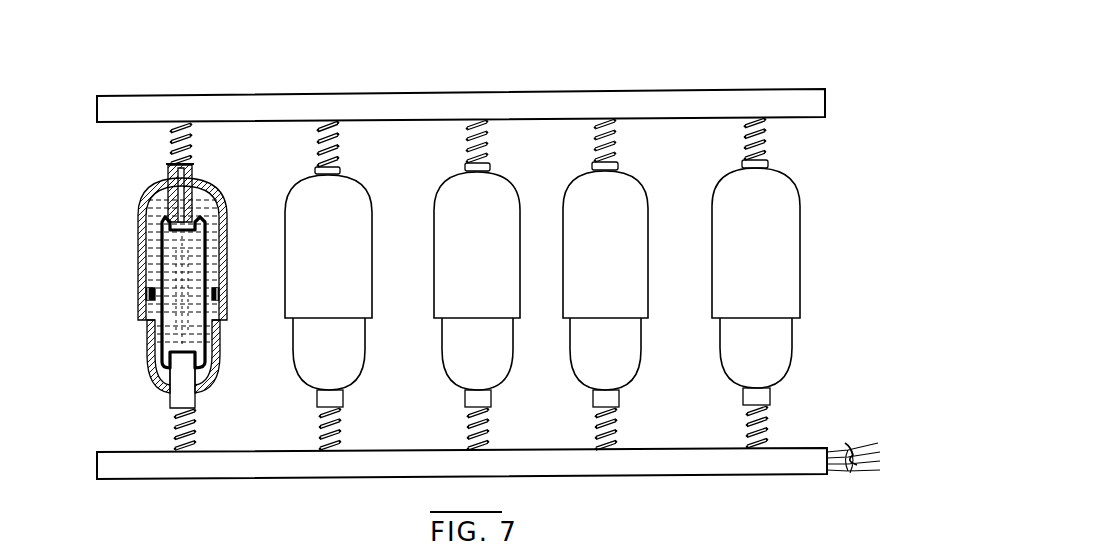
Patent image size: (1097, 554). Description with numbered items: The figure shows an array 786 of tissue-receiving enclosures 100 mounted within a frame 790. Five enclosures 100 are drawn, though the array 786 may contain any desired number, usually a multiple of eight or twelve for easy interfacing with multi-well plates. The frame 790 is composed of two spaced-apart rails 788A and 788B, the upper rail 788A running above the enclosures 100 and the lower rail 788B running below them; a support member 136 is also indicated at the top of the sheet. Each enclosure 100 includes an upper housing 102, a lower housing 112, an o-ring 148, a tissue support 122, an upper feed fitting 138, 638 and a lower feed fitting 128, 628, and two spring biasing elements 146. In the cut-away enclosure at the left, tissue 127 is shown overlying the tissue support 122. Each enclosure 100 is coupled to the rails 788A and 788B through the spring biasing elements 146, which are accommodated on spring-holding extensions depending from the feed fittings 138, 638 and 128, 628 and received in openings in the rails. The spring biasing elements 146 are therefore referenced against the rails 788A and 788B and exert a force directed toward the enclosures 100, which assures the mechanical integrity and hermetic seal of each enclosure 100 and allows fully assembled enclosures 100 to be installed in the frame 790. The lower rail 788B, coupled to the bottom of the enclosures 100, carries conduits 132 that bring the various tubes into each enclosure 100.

The array 786 is at (741, 33).
The frame 790 is at (61, 101).
The rail 788A is at (397, 106).
The rail 788B is at (400, 464).
The support member 136 is at (496, 5).
The tissue-receiving enclosure 100 is at (109, 277).
The upper housing 102 is at (712, 183).
The lower housing 112 is at (723, 369).
The spring biasing element 146 is at (768, 429).
The conduit 132 is at (842, 449).
The upper feed fitting 138 is at (131, 188).
The upper feed fitting 638 is at (170, 180).
The lower feed fitting 128 is at (223, 393).
The lower feed fitting 628 is at (188, 397).
The tissue 127 is at (204, 237).
The tissue support 122 is at (194, 273).
The o-ring 148 is at (221, 293).